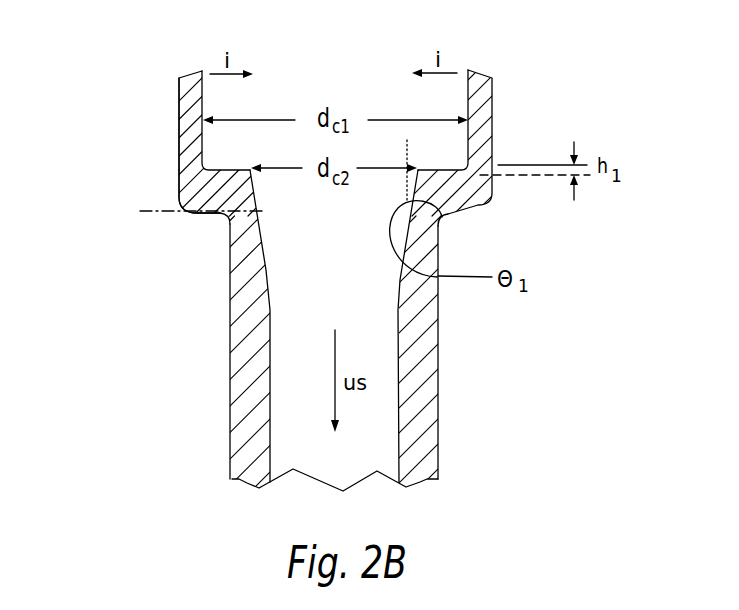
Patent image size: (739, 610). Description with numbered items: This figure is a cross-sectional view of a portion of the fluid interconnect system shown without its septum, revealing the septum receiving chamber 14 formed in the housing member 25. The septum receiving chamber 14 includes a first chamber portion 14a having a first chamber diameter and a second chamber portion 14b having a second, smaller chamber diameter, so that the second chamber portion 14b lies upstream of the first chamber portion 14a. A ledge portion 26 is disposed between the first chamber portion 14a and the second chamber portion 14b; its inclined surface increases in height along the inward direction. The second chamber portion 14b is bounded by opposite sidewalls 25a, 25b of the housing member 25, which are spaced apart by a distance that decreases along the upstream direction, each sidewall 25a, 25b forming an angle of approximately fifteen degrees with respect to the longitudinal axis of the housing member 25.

The septum receiving chamber 14 is at (87, 71).
The first chamber portion 14a is at (152, 71).
The second chamber portion 14b is at (152, 170).
The housing member 25 is at (230, 390).
The sidewall 25a is at (228, 218).
The sidewall 25b is at (439, 216).
The ledge portion 26 is at (230, 171).